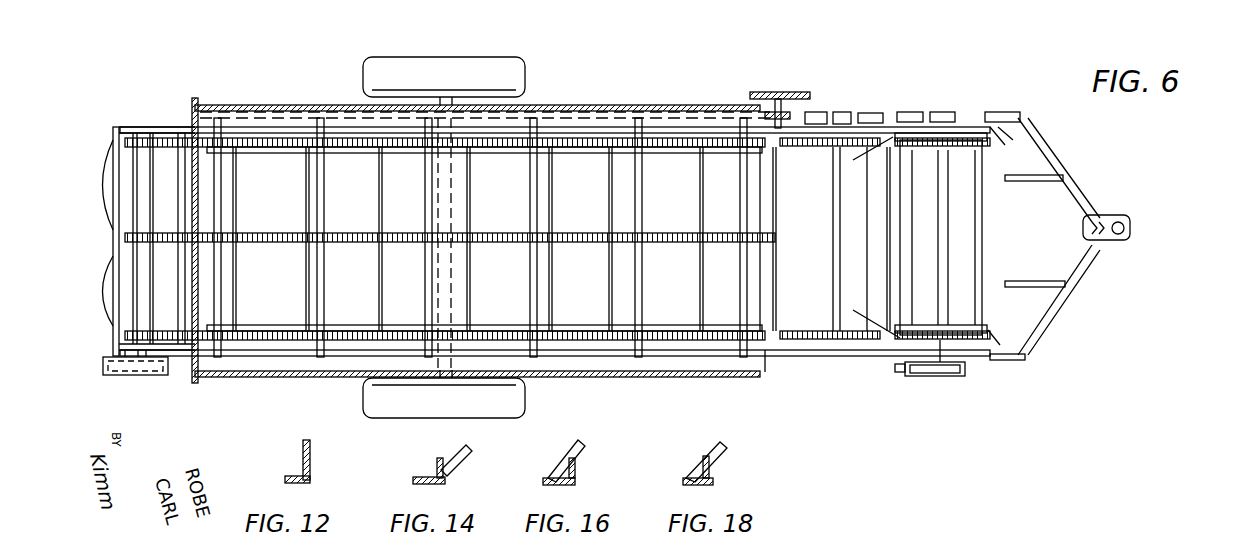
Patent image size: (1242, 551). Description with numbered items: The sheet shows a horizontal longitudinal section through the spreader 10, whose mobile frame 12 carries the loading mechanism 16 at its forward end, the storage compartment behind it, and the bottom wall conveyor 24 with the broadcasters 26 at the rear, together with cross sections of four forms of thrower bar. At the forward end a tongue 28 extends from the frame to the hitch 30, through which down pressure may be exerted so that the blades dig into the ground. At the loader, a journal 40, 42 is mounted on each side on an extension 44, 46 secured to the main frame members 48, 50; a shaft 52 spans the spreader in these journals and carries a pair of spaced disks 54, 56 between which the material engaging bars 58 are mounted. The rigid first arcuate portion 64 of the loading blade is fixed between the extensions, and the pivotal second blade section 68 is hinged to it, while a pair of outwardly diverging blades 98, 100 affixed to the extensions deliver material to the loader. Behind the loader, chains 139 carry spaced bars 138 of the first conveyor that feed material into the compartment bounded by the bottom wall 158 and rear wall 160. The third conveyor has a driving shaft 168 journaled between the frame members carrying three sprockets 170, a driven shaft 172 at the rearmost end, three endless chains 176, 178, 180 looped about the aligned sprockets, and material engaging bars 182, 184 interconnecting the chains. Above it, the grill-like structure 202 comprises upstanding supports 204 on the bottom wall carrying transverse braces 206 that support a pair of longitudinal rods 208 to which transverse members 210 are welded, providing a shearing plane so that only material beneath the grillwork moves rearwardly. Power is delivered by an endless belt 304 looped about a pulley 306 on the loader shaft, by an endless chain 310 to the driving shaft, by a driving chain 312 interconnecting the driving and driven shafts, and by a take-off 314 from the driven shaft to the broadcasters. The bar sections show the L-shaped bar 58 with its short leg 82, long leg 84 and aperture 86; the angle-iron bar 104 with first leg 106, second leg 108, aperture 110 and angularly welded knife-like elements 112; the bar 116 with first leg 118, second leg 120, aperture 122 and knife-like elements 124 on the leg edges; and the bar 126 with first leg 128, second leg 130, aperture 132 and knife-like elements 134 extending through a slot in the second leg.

In FIG. 6, the spreader 10 is at (840, 93).
In FIG. 6, the mobile frame 12 is at (715, 128).
In FIG. 6, the loading mechanism 16 is at (985, 207).
In FIG. 6, the bottom wall conveyor 24 is at (678, 337).
In FIG. 6, the broadcasters 26 is at (110, 140).
In FIG. 6, the tongue 28 is at (1075, 188).
In FIG. 6, the hitch 30 is at (1130, 215).
In FIG. 6, the journal 40 is at (972, 358).
In FIG. 6, the journal 42 is at (958, 115).
In FIG. 6, the extension 44 is at (900, 360).
In FIG. 6, the extension 46 is at (908, 112).
In FIG. 6, the main frame member 48 is at (775, 356).
In FIG. 6, the main frame member 50 is at (880, 118).
In FIG. 6, the shaft 52 is at (930, 192).
In FIG. 6, the disk 54 is at (932, 325).
In FIG. 6, the disk 56 is at (962, 160).
In FIG. 6, the material engaging bar 58 is at (912, 215).
In FIG. 12, the material engaging bar 58 is at (292, 470).
In FIG. 6, the first arcuate portion 64 is at (965, 255).
In FIG. 6, the second blade section 68 is at (900, 255).
In FIG. 12, the short leg 82 is at (285, 482).
In FIG. 12, the long leg 84 is at (310, 450).
In FIG. 12, the aperture 86 is at (312, 468).
In FIG. 6, the outwardly diverging blade 98 is at (1000, 338).
In FIG. 6, the outwardly diverging blade 100 is at (1000, 135).
In FIG. 14, the material engaging bar 104 is at (413, 480).
In FIG. 14, the first leg 106 is at (425, 477).
In FIG. 14, the second leg 108 is at (439, 458).
In FIG. 14, the aperture 110 is at (470, 455).
In FIG. 14, the knife-like element 112 is at (455, 468).
In FIG. 16, the material engaging bar 116 is at (545, 470).
In FIG. 16, the first leg 118 is at (543, 484).
In FIG. 16, the second leg 120 is at (577, 478).
In FIG. 16, the aperture 122 is at (577, 465).
In FIG. 16, the knife-like element 124 is at (565, 445).
In FIG. 18, the material engaging bar 126 is at (690, 455).
In FIG. 18, the first leg 128 is at (683, 483).
In FIG. 18, the second leg 130 is at (712, 480).
In FIG. 18, the aperture 132 is at (710, 464).
In FIG. 18, the knife-like element 134 is at (716, 442).
In FIG. 6, the spaced bar 138 is at (862, 238).
In FIG. 6, the chain 139 is at (820, 160).
In FIG. 6, the bottom wall 158 is at (264, 182).
In FIG. 6, the rear wall 160 is at (190, 120).
In FIG. 6, the driving shaft 168 is at (760, 214).
In FIG. 6, the sprocket 170 is at (778, 147).
In FIG. 6, the driven shaft 172 is at (135, 205).
In FIG. 6, the endless chain 176 is at (500, 330).
In FIG. 6, the endless chain 178 is at (507, 210).
In FIG. 6, the endless chain 180 is at (510, 147).
In FIG. 6, the material engaging bar 182 is at (608, 280).
In FIG. 6, the material engaging bar 184 is at (620, 190).
In FIG. 6, the grill-like structure 202 is at (645, 212).
In FIG. 6, the upstanding support 204 is at (305, 130).
In FIG. 6, the transversely extending brace 206 is at (318, 280).
In FIG. 6, the longitudinally extending rod 208 is at (352, 160).
In FIG. 6, the transverse member 210 is at (228, 285).
In FIG. 6, the endless belt 304 is at (930, 389).
In FIG. 6, the pulley 306 is at (962, 378).
In FIG. 6, the endless chain 310 is at (797, 92).
In FIG. 6, the driving chain 312 is at (580, 112).
In FIG. 6, the take-off 314 is at (150, 378).